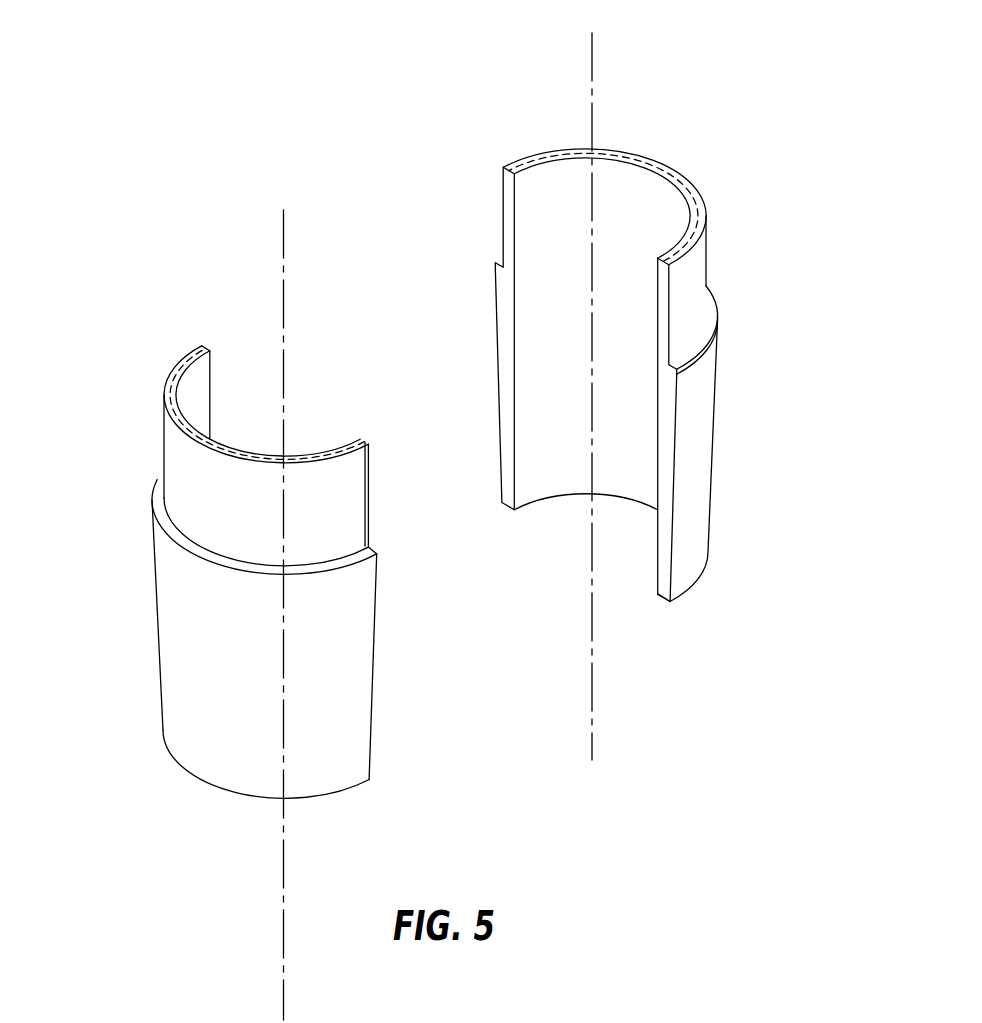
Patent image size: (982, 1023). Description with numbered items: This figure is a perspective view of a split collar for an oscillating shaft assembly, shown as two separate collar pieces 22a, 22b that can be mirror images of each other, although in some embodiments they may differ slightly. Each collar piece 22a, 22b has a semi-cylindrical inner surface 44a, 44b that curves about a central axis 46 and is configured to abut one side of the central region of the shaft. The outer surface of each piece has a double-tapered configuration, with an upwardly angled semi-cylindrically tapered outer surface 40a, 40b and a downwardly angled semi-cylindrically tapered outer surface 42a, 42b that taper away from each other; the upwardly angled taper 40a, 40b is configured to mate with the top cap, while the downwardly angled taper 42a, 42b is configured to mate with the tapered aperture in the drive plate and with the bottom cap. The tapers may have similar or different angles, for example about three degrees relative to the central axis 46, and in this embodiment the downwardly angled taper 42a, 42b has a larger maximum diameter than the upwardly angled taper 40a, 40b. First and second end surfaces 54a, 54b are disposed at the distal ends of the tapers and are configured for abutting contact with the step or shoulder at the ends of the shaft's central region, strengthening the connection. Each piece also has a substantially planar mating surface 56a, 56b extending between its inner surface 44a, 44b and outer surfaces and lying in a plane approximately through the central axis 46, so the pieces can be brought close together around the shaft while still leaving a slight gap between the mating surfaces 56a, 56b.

The collar piece 22a is at (262, 643).
The collar piece 22b is at (611, 384).
The upwardly angled semi-cylindrically tapered outer surface 40a is at (213, 445).
The upwardly angled semi-cylindrically tapered outer surface 40b is at (688, 283).
The downwardly angled semi-cylindrically tapered outer surface 42a is at (203, 707).
The downwardly angled semi-cylindrically tapered outer surface 42b is at (697, 415).
The semi-cylindrical inner surface 44a is at (197, 398).
The semi-cylindrical inner surface 44b is at (615, 440).
The central axis 46 is at (284, 252).
The first end surface 54a is at (180, 355).
The second end surface 54b is at (227, 795).
The mating surface 56a is at (373, 667).
The mating surface 56b is at (496, 330).